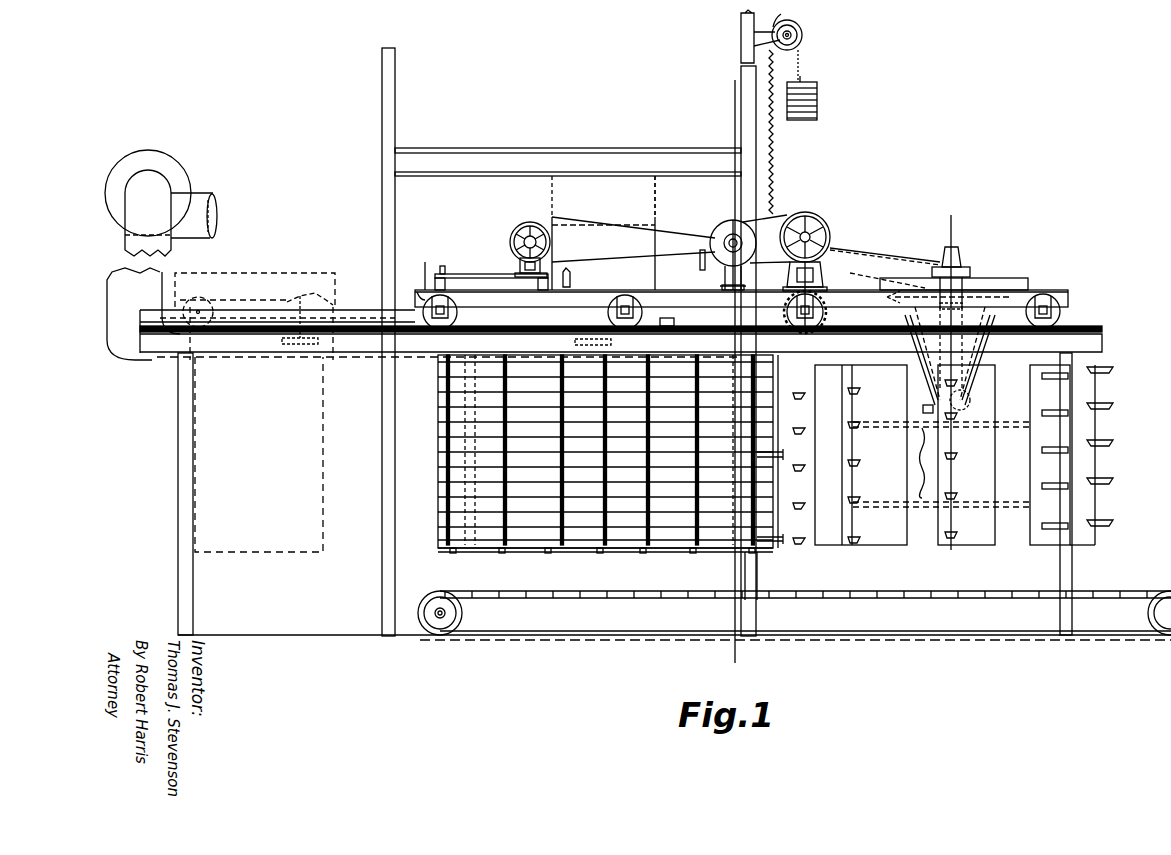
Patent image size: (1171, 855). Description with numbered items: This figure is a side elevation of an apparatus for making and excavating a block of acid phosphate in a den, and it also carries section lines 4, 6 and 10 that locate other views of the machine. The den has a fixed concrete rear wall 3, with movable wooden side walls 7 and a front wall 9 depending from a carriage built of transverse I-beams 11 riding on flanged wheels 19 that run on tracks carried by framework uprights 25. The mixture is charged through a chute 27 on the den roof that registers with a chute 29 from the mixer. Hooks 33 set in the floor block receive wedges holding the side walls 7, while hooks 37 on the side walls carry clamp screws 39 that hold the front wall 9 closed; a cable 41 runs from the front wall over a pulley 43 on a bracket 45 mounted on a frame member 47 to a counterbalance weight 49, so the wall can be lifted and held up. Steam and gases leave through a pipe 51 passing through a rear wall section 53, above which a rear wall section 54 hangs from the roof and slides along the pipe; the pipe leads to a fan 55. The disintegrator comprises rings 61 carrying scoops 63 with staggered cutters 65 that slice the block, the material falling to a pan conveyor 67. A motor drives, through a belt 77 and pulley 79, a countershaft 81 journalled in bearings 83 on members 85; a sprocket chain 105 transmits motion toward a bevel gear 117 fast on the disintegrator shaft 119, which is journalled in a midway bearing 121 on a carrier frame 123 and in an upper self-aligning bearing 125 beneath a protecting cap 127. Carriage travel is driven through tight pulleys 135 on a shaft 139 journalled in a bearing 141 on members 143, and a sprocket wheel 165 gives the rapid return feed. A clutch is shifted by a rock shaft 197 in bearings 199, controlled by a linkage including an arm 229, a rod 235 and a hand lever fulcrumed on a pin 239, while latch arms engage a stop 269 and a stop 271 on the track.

The concrete rear wall 3 is at (478, 440).
The post / section line 4 is at (738, 376).
The sprocket / section line 6 is at (805, 212).
The side walls 7 is at (550, 548).
The front wall 9 is at (776, 410).
The rod 10 is at (966, 387).
The transverse I-beams 11 is at (443, 274).
The flanged wheels 19 is at (457, 318).
The uprights 25 is at (193, 592).
The chute 27 is at (640, 227).
The chute 29 is at (650, 194).
The hooks 33 is at (490, 568).
The hooks 37 is at (778, 458).
The clamp screws 39 is at (792, 450).
The cable 41 is at (776, 162).
The pulley 43 is at (803, 35).
The bracket 45 is at (786, 14).
The frame member 47 is at (741, 20).
The counterbalance weight 49 is at (810, 88).
The pipe 51 is at (240, 354).
The rear wall section 53 is at (440, 330).
The rear wall section 54 is at (412, 308).
The fan 55 is at (172, 172).
The rings 61 is at (921, 463).
The scoops 63 is at (838, 548).
The cutters 65 is at (806, 550).
The pan conveyor 67 is at (794, 603).
The belt 77 is at (545, 232).
The pulley 79 is at (522, 229).
The countershaft 81 is at (524, 240).
The bearings 83 is at (520, 265).
The members 85 is at (478, 275).
The sprocket chain 105 is at (904, 255).
The bevel gear 117 is at (1020, 285).
The shaft 119 is at (963, 318).
The bearing 121 is at (972, 405).
The carrier frame 123 is at (1010, 348).
The self-aligning bearing 125 is at (974, 270).
The protecting cap 127 is at (960, 252).
The tight pulleys 135 is at (750, 247).
The shaft 139 is at (580, 229).
The bearing 141 is at (734, 222).
The members 143 is at (426, 278).
The sprocket wheel 165 is at (842, 229).
The rock shaft 197 is at (852, 250).
The bearings 199 is at (728, 295).
The arm 229 is at (698, 270).
The rod 235 is at (674, 323).
The pin 239 is at (572, 277).
The stop 269 is at (300, 346).
The stop 271 is at (614, 343).